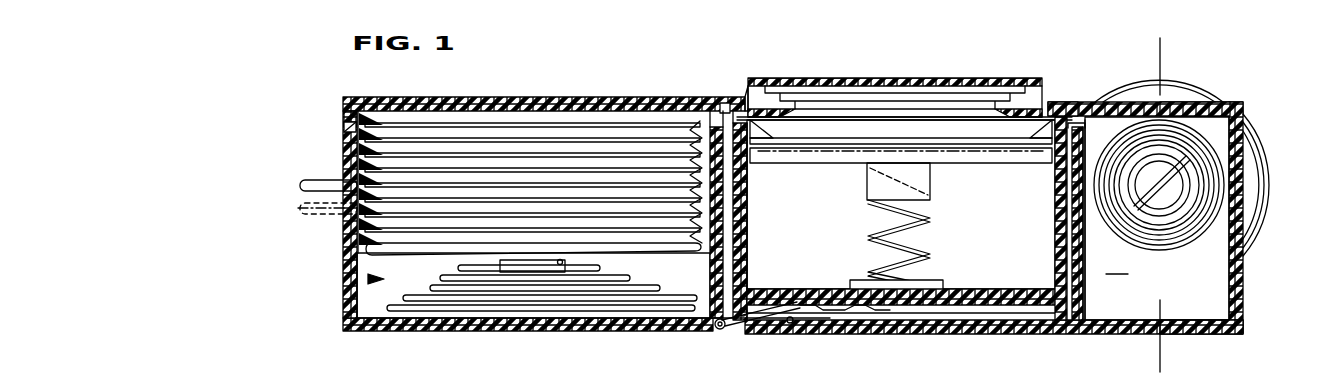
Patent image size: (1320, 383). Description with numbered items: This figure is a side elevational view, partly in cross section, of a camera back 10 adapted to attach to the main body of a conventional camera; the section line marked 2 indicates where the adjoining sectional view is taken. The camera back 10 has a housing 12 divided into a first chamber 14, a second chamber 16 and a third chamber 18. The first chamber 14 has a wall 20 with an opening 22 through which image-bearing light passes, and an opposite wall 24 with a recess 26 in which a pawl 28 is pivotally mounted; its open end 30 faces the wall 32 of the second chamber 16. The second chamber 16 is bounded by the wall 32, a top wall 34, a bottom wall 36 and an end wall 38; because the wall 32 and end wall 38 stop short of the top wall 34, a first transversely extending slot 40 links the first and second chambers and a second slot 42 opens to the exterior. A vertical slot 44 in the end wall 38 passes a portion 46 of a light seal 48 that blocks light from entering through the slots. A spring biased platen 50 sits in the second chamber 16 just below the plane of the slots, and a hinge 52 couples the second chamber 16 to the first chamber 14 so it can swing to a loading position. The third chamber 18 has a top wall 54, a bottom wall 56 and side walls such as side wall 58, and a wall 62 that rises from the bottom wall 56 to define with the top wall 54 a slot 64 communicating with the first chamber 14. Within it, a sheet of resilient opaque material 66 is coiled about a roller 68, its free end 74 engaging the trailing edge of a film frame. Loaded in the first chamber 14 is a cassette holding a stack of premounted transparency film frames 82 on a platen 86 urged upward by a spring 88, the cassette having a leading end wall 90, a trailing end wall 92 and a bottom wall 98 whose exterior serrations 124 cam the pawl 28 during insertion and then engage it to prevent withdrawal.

The camera back 10 is at (592, 82).
The housing 12 is at (765, 211).
The first chamber 14 is at (838, 178).
The second chamber 16 is at (348, 292).
The third chamber 18 is at (1230, 252).
The wall 20 is at (1067, 101).
The opening 22 is at (895, 78).
The opposite wall 24 is at (847, 322).
The recess 26 is at (800, 334).
The pawl 28 is at (760, 334).
The open end 30 is at (747, 258).
The wall 32 is at (708, 283).
The top wall 34 is at (445, 97).
The bottom wall 36 is at (450, 332).
The end wall 38 is at (346, 143).
The first transversely extending slot 40 is at (730, 106).
The second transversely extending slot 42 is at (343, 116).
The vertically extending slot 44 is at (340, 218).
The portion of light seal 46 is at (300, 184).
The light seal 48 is at (350, 122).
The spring biased platen 50 is at (458, 250).
The hinge 52 is at (718, 331).
The top wall 54 is at (1208, 105).
The bottom wall 56 is at (1207, 335).
The side wall 58 is at (1106, 272).
The wall 62 is at (1080, 286).
The laterally extending slot 64 is at (1080, 125).
The sheet of resilient opaque material 66 is at (1175, 252).
The roller 68 is at (1195, 187).
The opposite end 74 is at (748, 150).
The premounted transparency film frames 82 is at (530, 207).
The platen 86 is at (967, 165).
The spring 88 is at (935, 215).
The leading end wall 90 is at (748, 225).
The trailing end wall 92 is at (1057, 212).
The bottom wall 98 is at (985, 295).
The serrations 124 is at (880, 312).
The section line 2- 2 is at (1115, 50).